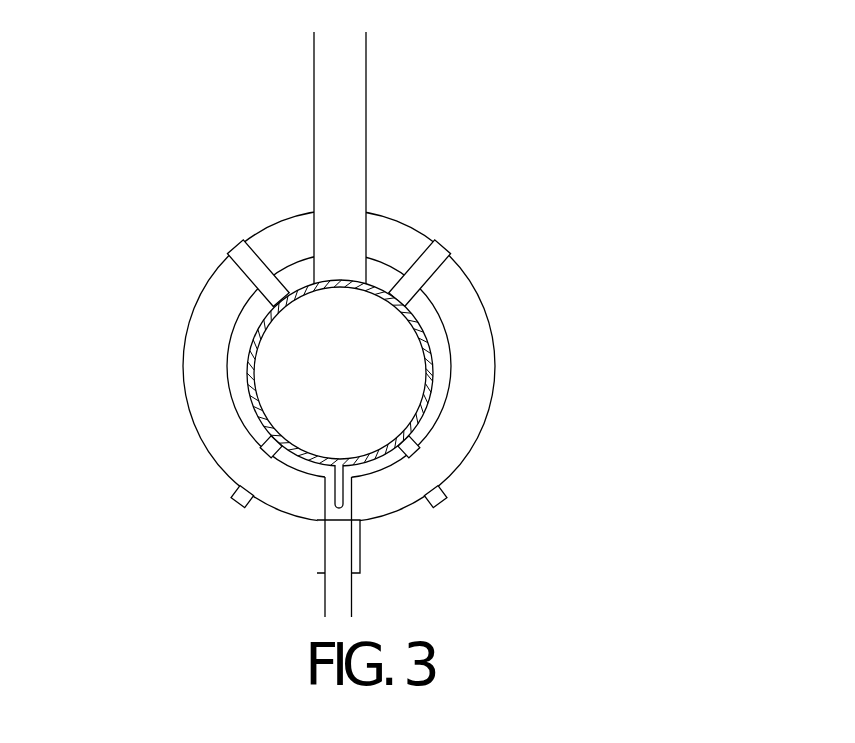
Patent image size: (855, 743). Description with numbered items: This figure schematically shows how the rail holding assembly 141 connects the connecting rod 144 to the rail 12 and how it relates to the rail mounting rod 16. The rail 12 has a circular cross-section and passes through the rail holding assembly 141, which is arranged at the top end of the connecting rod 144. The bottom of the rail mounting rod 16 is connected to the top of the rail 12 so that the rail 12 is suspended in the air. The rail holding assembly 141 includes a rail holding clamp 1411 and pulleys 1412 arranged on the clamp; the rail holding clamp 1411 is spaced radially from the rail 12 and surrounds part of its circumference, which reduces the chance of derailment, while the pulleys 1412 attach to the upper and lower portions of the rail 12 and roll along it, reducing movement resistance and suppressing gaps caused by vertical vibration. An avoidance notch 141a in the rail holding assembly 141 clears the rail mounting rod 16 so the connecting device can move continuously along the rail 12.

The rail mounting rod 16 is at (337, 162).
The avoidance notch 141a is at (383, 248).
The rail 12 is at (263, 330).
The pulley 1412 is at (415, 277).
The rail holding assembly 141 is at (498, 408).
The rail holding clamp 1411 is at (468, 420).
The connecting rod 144 is at (342, 606).